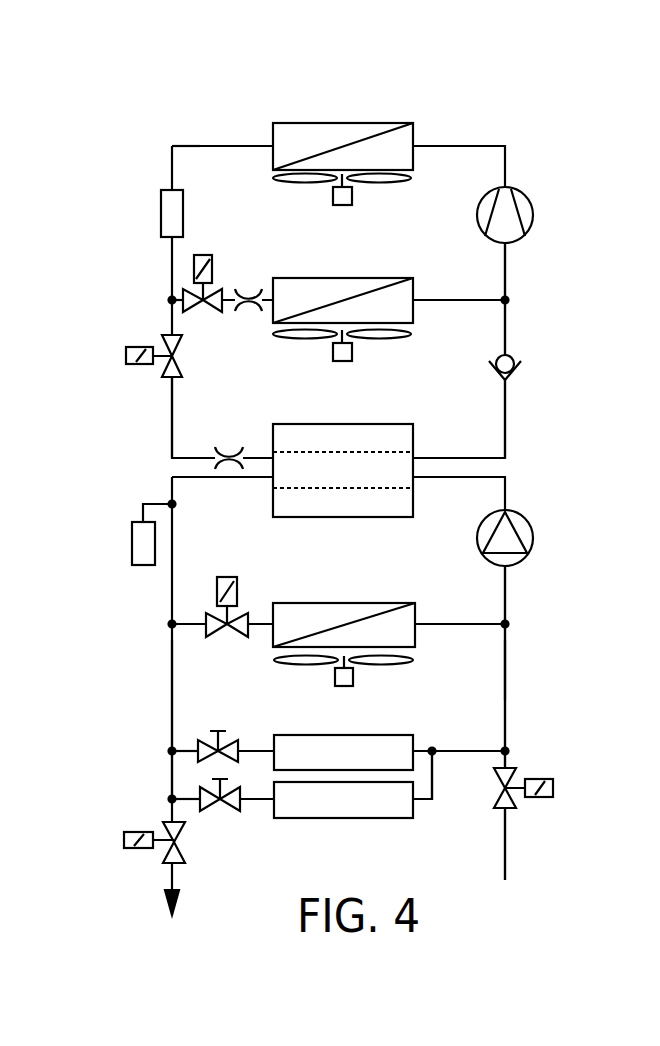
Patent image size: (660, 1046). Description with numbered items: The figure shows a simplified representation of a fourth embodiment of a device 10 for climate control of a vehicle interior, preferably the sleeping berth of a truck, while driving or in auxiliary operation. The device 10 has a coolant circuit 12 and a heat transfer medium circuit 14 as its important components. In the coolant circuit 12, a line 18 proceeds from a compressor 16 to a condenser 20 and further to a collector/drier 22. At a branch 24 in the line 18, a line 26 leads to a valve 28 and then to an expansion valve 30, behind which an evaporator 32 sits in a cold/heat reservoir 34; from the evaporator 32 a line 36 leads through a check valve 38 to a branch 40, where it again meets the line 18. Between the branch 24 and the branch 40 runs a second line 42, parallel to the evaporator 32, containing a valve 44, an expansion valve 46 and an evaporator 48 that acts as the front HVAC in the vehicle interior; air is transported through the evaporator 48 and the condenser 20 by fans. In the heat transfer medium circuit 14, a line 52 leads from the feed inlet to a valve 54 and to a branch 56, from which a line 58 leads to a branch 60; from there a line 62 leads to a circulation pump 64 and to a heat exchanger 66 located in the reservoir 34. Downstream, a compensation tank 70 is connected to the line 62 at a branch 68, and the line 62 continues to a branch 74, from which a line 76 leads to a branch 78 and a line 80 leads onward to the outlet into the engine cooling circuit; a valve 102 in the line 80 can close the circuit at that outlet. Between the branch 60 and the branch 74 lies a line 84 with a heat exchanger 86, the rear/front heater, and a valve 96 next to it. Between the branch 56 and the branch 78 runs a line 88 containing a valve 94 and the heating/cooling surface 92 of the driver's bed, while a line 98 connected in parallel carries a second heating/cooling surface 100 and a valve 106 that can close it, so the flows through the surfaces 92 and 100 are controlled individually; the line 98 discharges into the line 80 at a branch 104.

The device 10 is at (140, 130).
The coolant circuit 12 is at (522, 270).
The heat transfer medium circuit 14 is at (522, 676).
The compressor 16 is at (533, 201).
The line 18 is at (474, 144).
The condenser 20 is at (358, 132).
The collector/drier 22 is at (162, 213).
The branch 24 is at (170, 300).
The line 26 is at (170, 417).
The valve 28 is at (160, 370).
The expansion valve 30 is at (222, 445).
The evaporator 32 is at (388, 445).
The cold/heat reservoir 34 is at (414, 440).
The line 36 is at (507, 415).
The check valve 38 is at (514, 365).
The branch 40 is at (508, 300).
The second line 42 is at (465, 302).
The valve 44 is at (190, 290).
The expansion valve 46 is at (249, 286).
The evaporator 48 is at (380, 282).
The line 52 is at (507, 858).
The valve 54 is at (517, 805).
The branch 56 is at (507, 750).
The line 58 is at (505, 725).
The branch 60 is at (506, 624).
The line 62 is at (507, 590).
The circulation pump 64 is at (526, 520).
The heat exchanger 66 is at (370, 489).
The branch 68 is at (172, 504).
The compensation tank 70 is at (133, 546).
The branch 74 is at (172, 624).
The line 76 is at (172, 686).
The branch 78 is at (172, 751).
The line 80 is at (172, 785).
The line 84 is at (482, 641).
The heat exchanger 86 is at (320, 608).
The line 88 is at (470, 752).
The heating/cooling surface 92 is at (390, 747).
The valve 94 is at (198, 740).
The valve 96 is at (215, 612).
The line 98 is at (432, 800).
The second heating/cooling surface 100 is at (361, 818).
The valve 102 is at (172, 852).
The branch 104 is at (173, 800).
The valve 106 is at (219, 806).